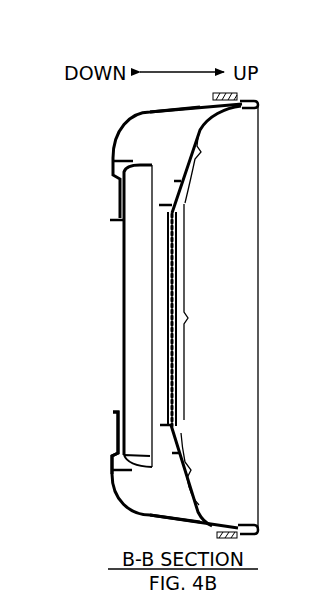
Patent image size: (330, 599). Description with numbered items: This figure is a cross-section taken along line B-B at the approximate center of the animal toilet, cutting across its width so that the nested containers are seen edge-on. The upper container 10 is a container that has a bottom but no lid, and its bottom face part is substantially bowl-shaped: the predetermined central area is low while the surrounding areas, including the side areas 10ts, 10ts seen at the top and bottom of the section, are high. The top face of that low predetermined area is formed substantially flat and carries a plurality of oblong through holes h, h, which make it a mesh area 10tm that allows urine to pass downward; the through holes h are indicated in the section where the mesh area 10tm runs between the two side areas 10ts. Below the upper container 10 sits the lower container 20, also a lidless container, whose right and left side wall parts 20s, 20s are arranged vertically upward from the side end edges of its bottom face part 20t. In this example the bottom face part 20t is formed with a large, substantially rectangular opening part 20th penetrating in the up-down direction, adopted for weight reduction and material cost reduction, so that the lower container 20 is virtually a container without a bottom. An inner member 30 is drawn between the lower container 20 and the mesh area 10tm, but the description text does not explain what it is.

The upper container 10 is at (262, 248).
The side area of bottom face part 10ts is at (200, 316).
The mesh area 10tm is at (204, 315).
The lower container 20 is at (112, 130).
The side wall part 20s is at (147, 115).
The bottom face part 20t is at (111, 437).
The opening part 20th is at (116, 344).
The inner member 30 is at (120, 304).
The through hole h is at (166, 262).